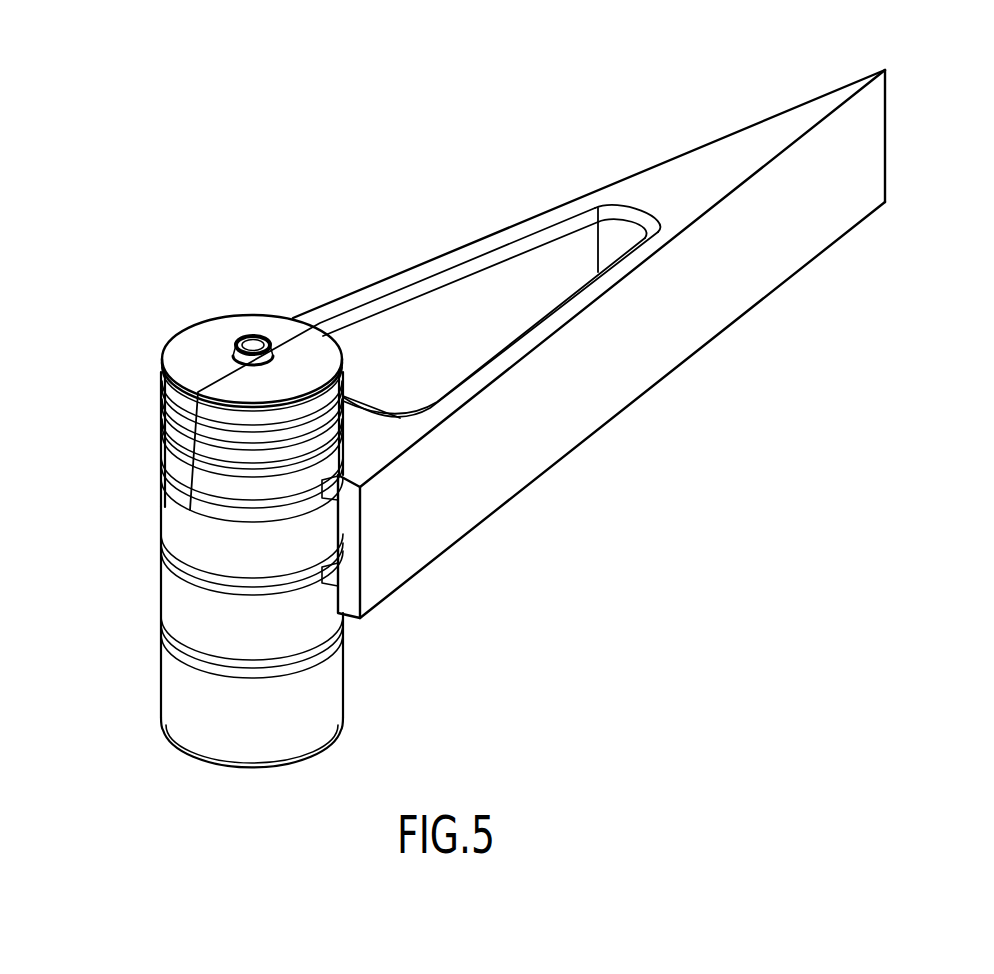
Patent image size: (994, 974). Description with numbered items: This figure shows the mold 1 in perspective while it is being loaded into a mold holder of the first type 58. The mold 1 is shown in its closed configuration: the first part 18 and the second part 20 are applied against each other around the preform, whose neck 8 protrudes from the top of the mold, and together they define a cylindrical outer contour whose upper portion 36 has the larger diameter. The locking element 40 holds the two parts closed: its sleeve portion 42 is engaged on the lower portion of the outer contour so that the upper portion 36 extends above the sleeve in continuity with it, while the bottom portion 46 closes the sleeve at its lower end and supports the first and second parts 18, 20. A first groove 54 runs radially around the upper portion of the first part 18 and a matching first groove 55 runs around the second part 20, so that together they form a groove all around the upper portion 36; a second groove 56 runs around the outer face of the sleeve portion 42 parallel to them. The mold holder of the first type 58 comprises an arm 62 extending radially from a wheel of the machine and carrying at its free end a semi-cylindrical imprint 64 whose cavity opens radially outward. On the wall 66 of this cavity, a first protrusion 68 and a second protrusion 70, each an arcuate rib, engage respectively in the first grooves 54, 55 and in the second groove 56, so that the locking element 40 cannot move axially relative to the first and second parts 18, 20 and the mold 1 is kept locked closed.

The mold 1 is at (125, 551).
The neck 8 is at (238, 340).
The first part 18 is at (207, 350).
The second part 20 is at (313, 360).
The upper portion 36 is at (163, 425).
The locking element 40 is at (178, 607).
The sleeve portion 42 is at (313, 633).
The bottom portion 46 is at (182, 748).
The first groove 54 is at (163, 395).
The first groove 55 is at (300, 442).
The second groove 56 is at (307, 670).
The mold holder of a first type 58 is at (760, 100).
The arm 62 is at (563, 252).
The imprint 64 is at (345, 401).
The wall 66 is at (353, 430).
The first protrusion 68 is at (333, 520).
The second protrusion 70 is at (337, 567).